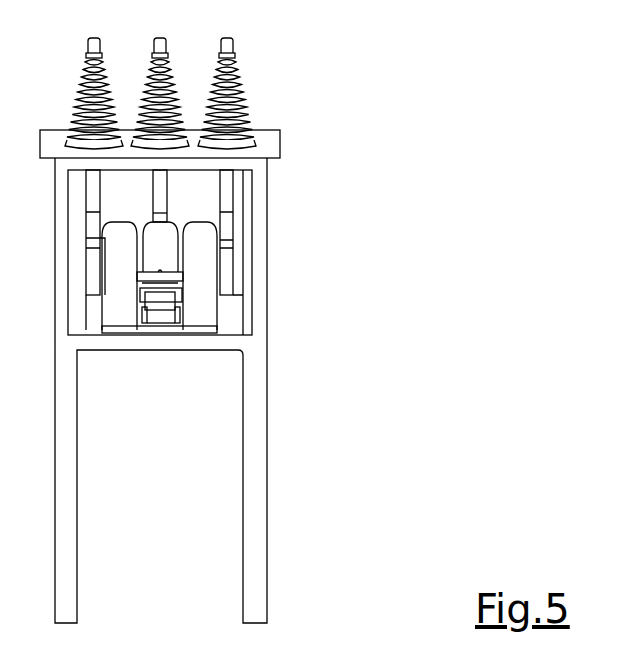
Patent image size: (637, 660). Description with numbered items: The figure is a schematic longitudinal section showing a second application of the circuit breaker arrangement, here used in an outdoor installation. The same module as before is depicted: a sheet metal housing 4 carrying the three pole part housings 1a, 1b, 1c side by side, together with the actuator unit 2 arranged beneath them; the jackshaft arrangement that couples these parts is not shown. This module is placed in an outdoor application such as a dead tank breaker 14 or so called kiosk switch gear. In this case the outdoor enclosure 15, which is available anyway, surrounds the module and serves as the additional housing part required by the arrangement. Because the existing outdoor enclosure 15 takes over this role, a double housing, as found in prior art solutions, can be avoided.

The pole part housing 1a is at (112, 245).
The pole part housing 1b is at (162, 243).
The pole part housing 1c is at (203, 247).
The actuator unit 2 is at (160, 302).
The sheet metal housing 4 is at (157, 334).
The dead tank breaker 14 is at (120, 558).
The outdoor enclosure 15 is at (262, 318).